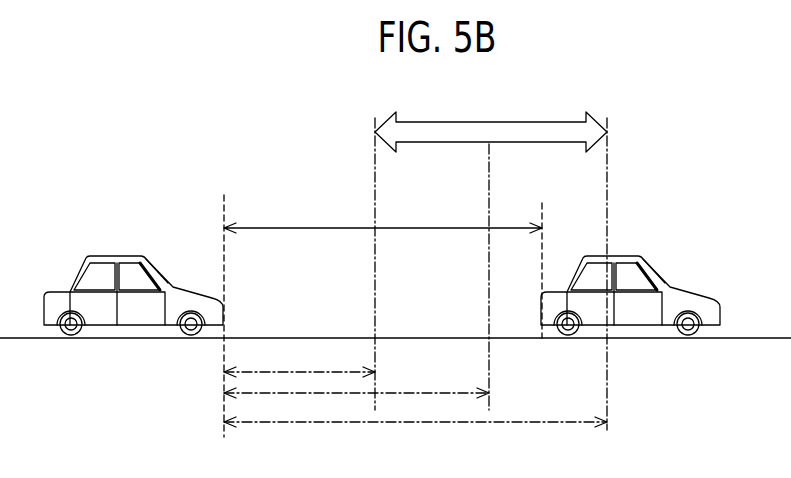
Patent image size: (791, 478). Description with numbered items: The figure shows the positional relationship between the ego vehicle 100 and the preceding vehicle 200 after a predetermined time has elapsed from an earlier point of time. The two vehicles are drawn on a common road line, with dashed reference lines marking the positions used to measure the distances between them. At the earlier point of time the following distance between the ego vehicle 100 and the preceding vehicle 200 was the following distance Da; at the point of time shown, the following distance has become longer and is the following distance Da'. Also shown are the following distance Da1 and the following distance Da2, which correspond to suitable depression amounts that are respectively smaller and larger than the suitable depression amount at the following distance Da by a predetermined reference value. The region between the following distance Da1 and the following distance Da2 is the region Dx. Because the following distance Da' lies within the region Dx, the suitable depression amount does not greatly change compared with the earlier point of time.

The ego vehicle 100 is at (115, 257).
The preceding vehicle 200 is at (638, 257).
The region Dx is at (491, 121).
The following distance Da' is at (383, 216).
The following distance Da1 is at (299, 361).
The following distance Da is at (356, 382).
The following distance Da2 is at (415, 410).